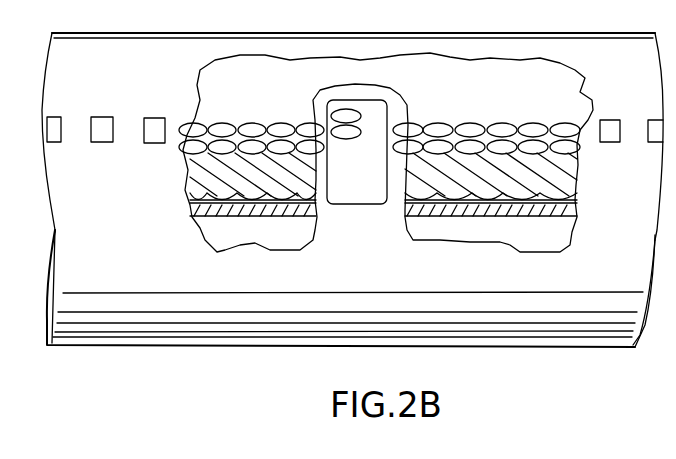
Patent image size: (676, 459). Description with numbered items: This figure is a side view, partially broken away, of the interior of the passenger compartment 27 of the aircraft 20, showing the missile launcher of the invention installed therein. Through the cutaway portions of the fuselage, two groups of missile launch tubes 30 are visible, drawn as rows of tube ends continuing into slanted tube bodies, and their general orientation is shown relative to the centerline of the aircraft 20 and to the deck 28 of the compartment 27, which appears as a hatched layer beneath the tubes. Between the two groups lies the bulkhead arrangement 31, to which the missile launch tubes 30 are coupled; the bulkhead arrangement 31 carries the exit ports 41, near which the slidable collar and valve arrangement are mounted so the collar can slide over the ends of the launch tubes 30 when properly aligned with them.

The aircraft 20 is at (548, 34).
The passenger compartment 27 is at (533, 93).
The deck 28 is at (507, 217).
The missile launch tubes 30 is at (219, 125).
The bulkhead arrangement 31 is at (360, 195).
The exit ports 41 is at (360, 118).